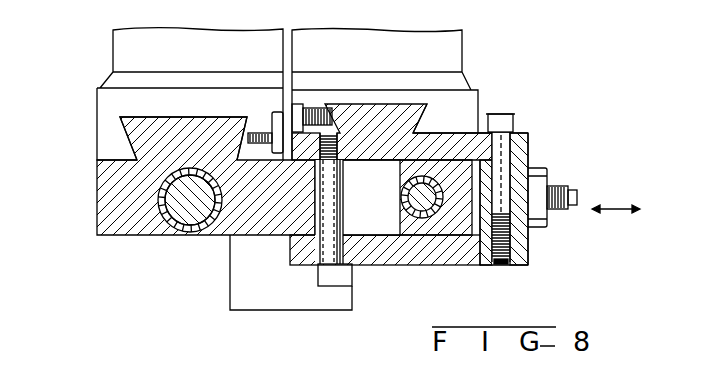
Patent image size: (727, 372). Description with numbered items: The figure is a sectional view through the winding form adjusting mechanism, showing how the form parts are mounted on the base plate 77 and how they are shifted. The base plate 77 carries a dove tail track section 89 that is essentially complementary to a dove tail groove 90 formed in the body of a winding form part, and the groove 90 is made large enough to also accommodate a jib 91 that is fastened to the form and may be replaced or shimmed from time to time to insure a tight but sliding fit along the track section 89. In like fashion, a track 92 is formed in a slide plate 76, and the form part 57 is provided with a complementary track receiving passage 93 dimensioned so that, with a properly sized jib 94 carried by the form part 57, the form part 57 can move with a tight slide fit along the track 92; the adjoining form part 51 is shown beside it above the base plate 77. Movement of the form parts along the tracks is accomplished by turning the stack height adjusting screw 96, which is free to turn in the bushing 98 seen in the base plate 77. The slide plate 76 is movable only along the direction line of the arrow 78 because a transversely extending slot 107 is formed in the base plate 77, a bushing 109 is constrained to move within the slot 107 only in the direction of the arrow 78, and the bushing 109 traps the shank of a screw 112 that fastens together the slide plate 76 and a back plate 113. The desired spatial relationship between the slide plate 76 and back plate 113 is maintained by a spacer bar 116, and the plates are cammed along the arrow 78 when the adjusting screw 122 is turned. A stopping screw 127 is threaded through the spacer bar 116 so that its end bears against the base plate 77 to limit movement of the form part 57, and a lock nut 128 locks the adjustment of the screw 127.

The left carriage block 51 is at (186, 37).
The form part 57 is at (398, 38).
The dove tail track section 89 is at (123, 137).
The dove tail groove 90 is at (170, 116).
The jib 91 is at (258, 126).
The jib 94 is at (333, 106).
The track receiving passage 93 is at (403, 102).
The track 92 is at (418, 120).
The base plate 77 is at (107, 206).
The bushing 98 is at (152, 236).
The stack height adjusting screw 96 is at (193, 220).
The adjusting screw 122 is at (430, 214).
The slot 107 is at (398, 222).
The bushing 109 is at (341, 186).
The screw 112 is at (333, 280).
The slide plate 76 is at (520, 143).
The spacer bar 116 is at (515, 185).
The lock nut 128 is at (540, 228).
The screw 127 is at (570, 198).
The back plate 113 is at (526, 268).
The arrow 78 is at (631, 203).